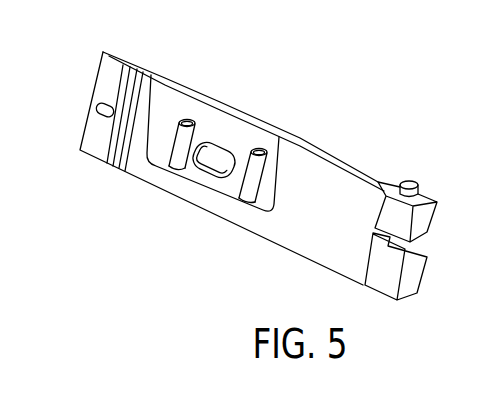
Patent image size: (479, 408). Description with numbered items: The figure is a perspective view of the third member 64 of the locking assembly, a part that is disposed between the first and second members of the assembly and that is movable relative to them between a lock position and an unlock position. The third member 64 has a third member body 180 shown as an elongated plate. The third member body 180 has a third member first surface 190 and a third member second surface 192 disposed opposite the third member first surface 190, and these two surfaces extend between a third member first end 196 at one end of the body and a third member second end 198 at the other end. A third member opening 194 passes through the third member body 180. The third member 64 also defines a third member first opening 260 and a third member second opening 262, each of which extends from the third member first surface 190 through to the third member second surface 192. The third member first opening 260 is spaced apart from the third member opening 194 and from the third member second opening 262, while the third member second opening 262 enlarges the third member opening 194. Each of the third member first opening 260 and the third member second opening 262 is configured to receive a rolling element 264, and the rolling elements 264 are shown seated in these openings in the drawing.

The third member 64 is at (364, 137).
The third member body 180 is at (272, 225).
The third member first surface 190 is at (283, 135).
The third member second surface 192 is at (205, 105).
The third member opening 194 is at (229, 142).
The third member first end 196 is at (386, 283).
The third member second end 198 is at (80, 151).
The third member first opening 260 is at (240, 193).
The third member second opening 262 is at (176, 118).
The rolling element 264 is at (176, 168).